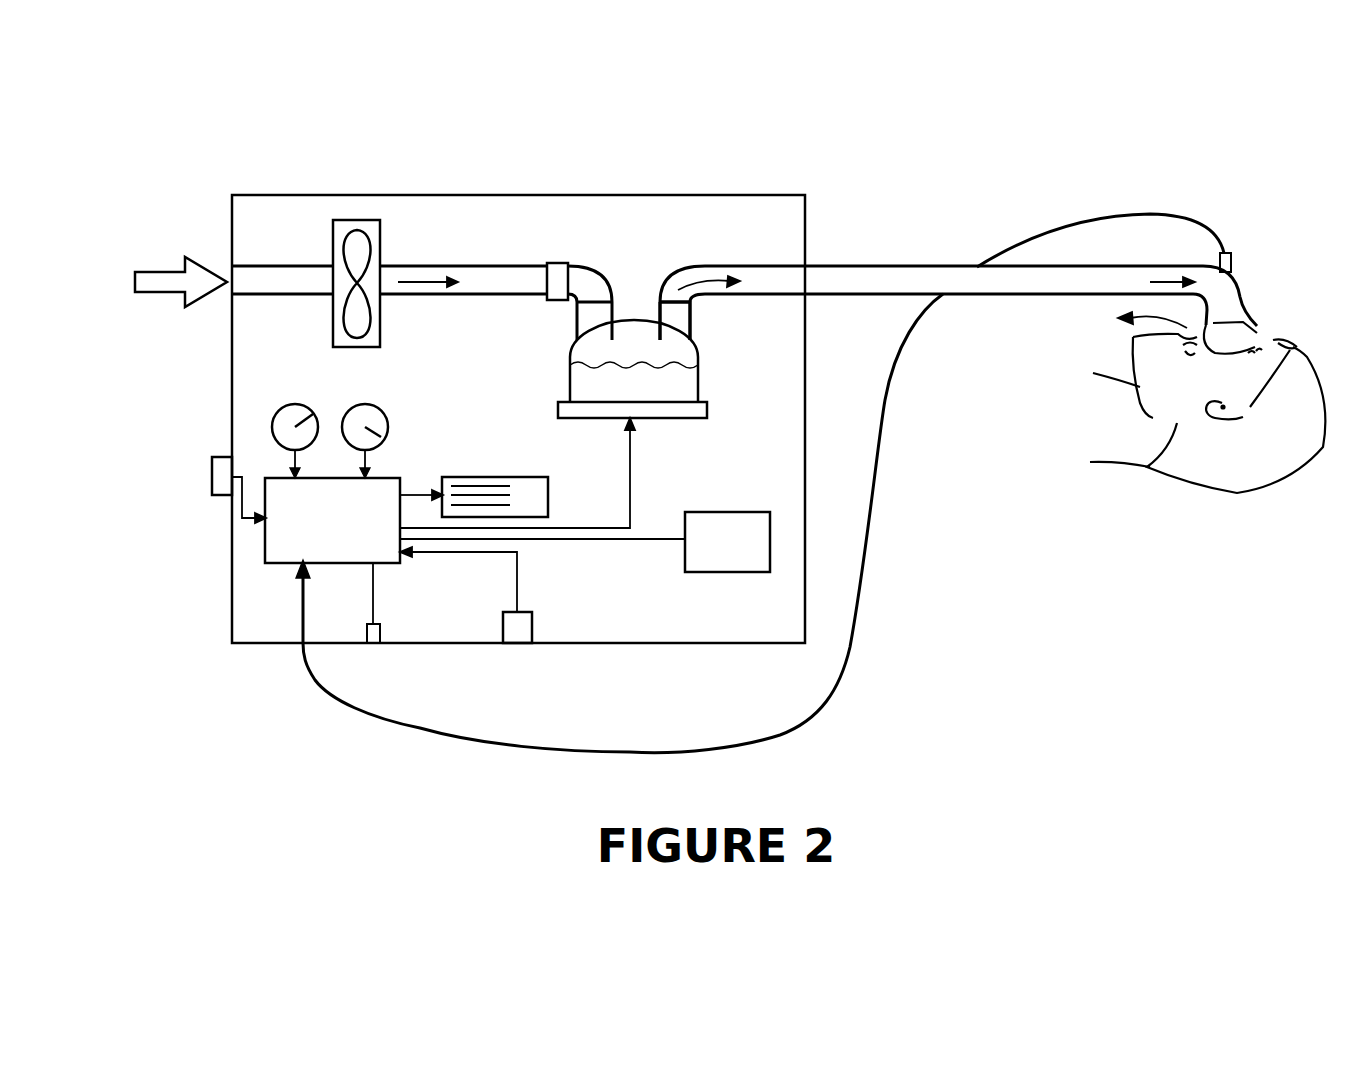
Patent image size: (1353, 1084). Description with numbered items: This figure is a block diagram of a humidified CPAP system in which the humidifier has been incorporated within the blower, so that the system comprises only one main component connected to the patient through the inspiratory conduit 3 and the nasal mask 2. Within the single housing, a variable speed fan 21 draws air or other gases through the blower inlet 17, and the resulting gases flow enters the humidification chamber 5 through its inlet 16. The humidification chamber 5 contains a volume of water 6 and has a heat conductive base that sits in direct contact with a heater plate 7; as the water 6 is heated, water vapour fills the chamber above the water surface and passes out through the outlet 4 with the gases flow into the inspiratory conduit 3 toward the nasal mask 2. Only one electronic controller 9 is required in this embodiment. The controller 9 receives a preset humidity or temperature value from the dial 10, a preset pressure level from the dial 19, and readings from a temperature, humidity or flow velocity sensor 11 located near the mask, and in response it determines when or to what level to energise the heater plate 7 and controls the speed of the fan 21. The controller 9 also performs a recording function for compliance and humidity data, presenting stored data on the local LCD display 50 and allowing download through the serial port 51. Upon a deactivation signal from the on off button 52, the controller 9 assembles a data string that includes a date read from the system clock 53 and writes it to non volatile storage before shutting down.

The nasal mask 2 is at (1257, 327).
The inspiratory conduit 3 is at (969, 296).
The outlet 4 is at (690, 318).
The humidification chamber 5 is at (700, 358).
The water 6 is at (634, 380).
The heater plate 7 is at (707, 409).
The electronic controller 9 is at (458, 530).
The dial 10 is at (350, 408).
The sensor 11 is at (1233, 262).
The inlet 16 is at (577, 317).
The blower inlet 17 is at (228, 277).
The dial 19 is at (272, 432).
The variable speed fan 21 is at (358, 232).
The LCD display 50 is at (480, 477).
The serial port 51 is at (381, 633).
The on off button 52 is at (210, 472).
The system clock 53 is at (712, 572).